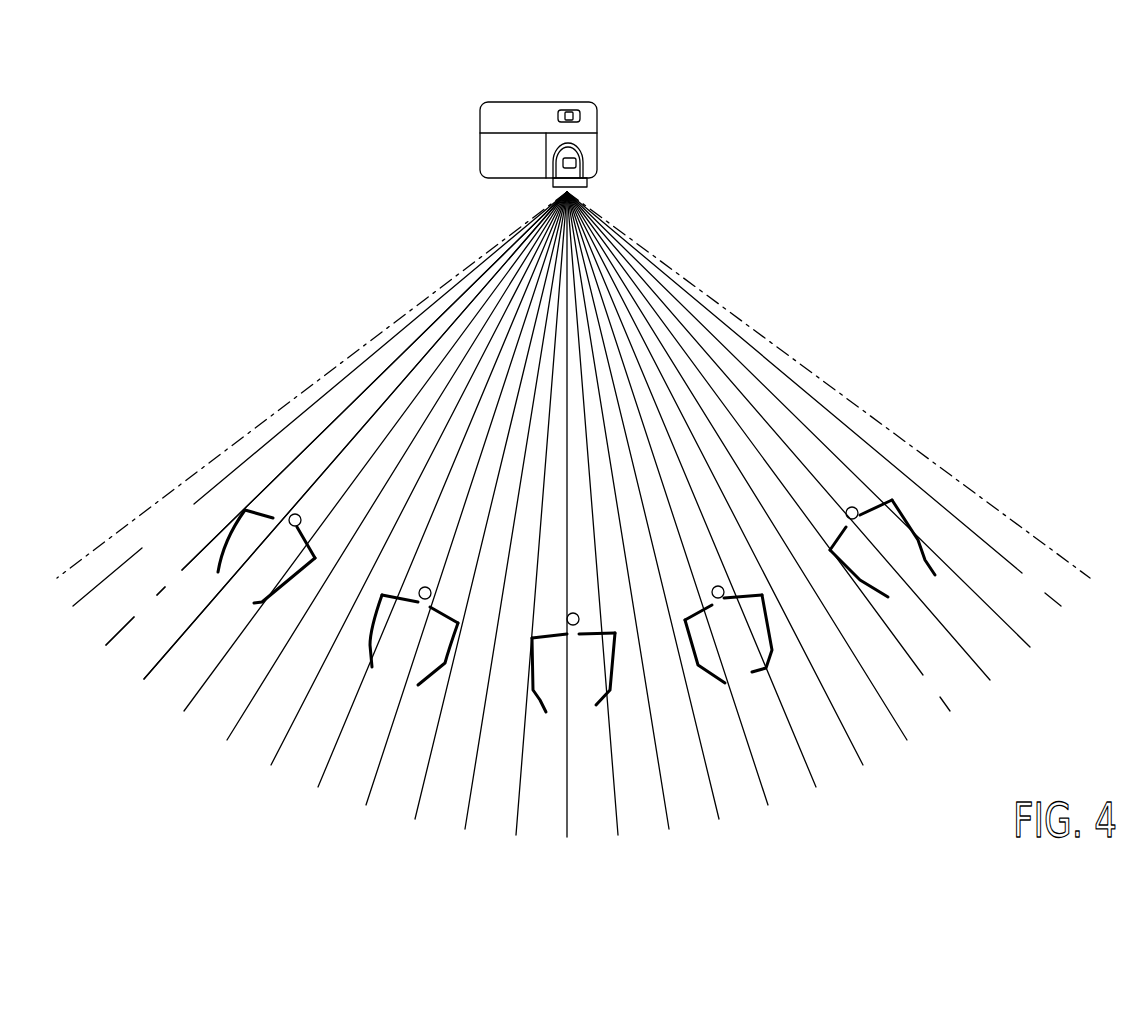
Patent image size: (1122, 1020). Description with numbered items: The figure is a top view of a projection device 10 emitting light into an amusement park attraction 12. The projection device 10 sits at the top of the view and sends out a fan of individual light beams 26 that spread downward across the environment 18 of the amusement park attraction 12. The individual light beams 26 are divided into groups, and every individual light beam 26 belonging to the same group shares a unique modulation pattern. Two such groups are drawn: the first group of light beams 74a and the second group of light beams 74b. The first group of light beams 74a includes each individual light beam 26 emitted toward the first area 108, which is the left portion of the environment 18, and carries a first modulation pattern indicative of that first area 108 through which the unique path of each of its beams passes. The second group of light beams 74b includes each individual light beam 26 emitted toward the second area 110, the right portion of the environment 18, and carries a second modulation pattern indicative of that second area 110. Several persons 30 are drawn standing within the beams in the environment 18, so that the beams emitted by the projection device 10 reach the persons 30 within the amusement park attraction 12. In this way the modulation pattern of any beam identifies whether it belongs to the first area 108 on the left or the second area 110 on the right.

The projection device 10 is at (516, 116).
The amusement park attraction 12 is at (573, 513).
The environment 18 is at (252, 321).
The individual light beam 26 is at (305, 450).
The persons 30 is at (243, 522).
The first group of light beams 74a is at (430, 356).
The second group of light beams 74b is at (807, 446).
The first area 108 is at (433, 291).
The second area 110 is at (787, 353).